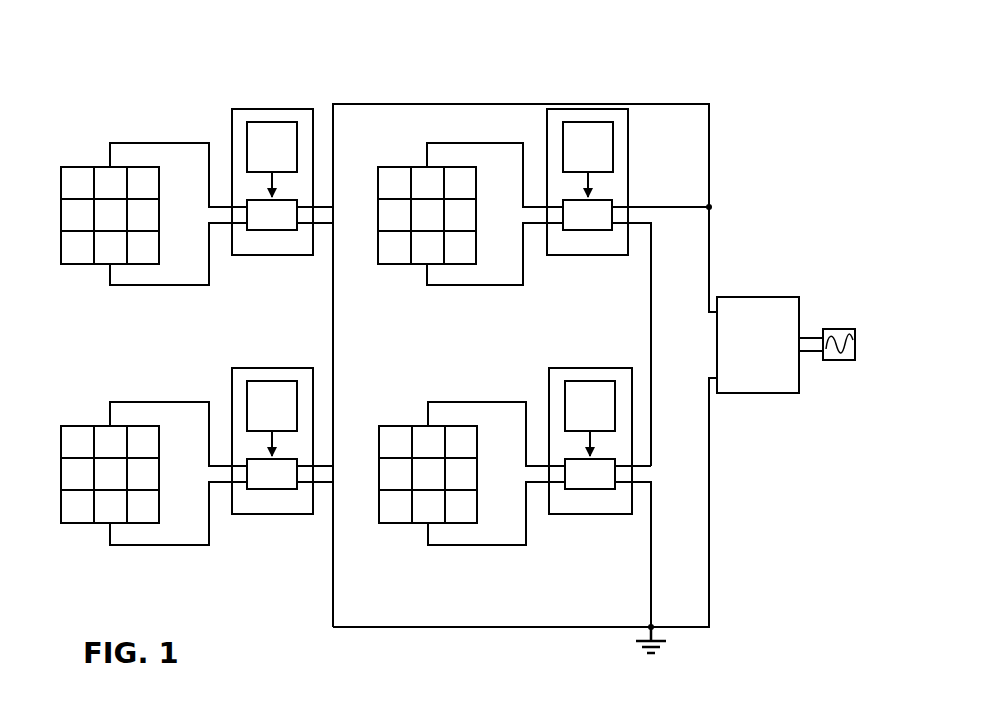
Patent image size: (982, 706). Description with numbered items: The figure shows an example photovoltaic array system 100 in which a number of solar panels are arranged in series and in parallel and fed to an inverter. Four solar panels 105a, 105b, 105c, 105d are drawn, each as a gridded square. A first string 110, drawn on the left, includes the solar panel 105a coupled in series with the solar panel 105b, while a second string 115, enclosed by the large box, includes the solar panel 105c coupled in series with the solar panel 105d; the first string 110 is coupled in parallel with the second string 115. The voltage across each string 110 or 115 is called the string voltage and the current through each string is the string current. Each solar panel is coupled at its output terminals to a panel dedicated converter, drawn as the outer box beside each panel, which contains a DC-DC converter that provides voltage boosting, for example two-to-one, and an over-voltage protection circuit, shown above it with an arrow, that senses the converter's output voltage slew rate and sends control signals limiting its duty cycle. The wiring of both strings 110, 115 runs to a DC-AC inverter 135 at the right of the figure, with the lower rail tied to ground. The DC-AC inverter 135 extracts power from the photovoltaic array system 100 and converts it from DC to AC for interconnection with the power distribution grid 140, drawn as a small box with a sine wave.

The photovoltaic array system 100 is at (733, 58).
The solar panel 105a is at (76, 265).
The solar panel 105b is at (76, 524).
The solar panel 105c is at (393, 265).
The solar panel 105d is at (394, 524).
The first string 110 is at (108, 84).
The second string 115 is at (425, 84).
The DC-AC inverter 135 is at (765, 394).
The power distribution grid 140 is at (833, 361).